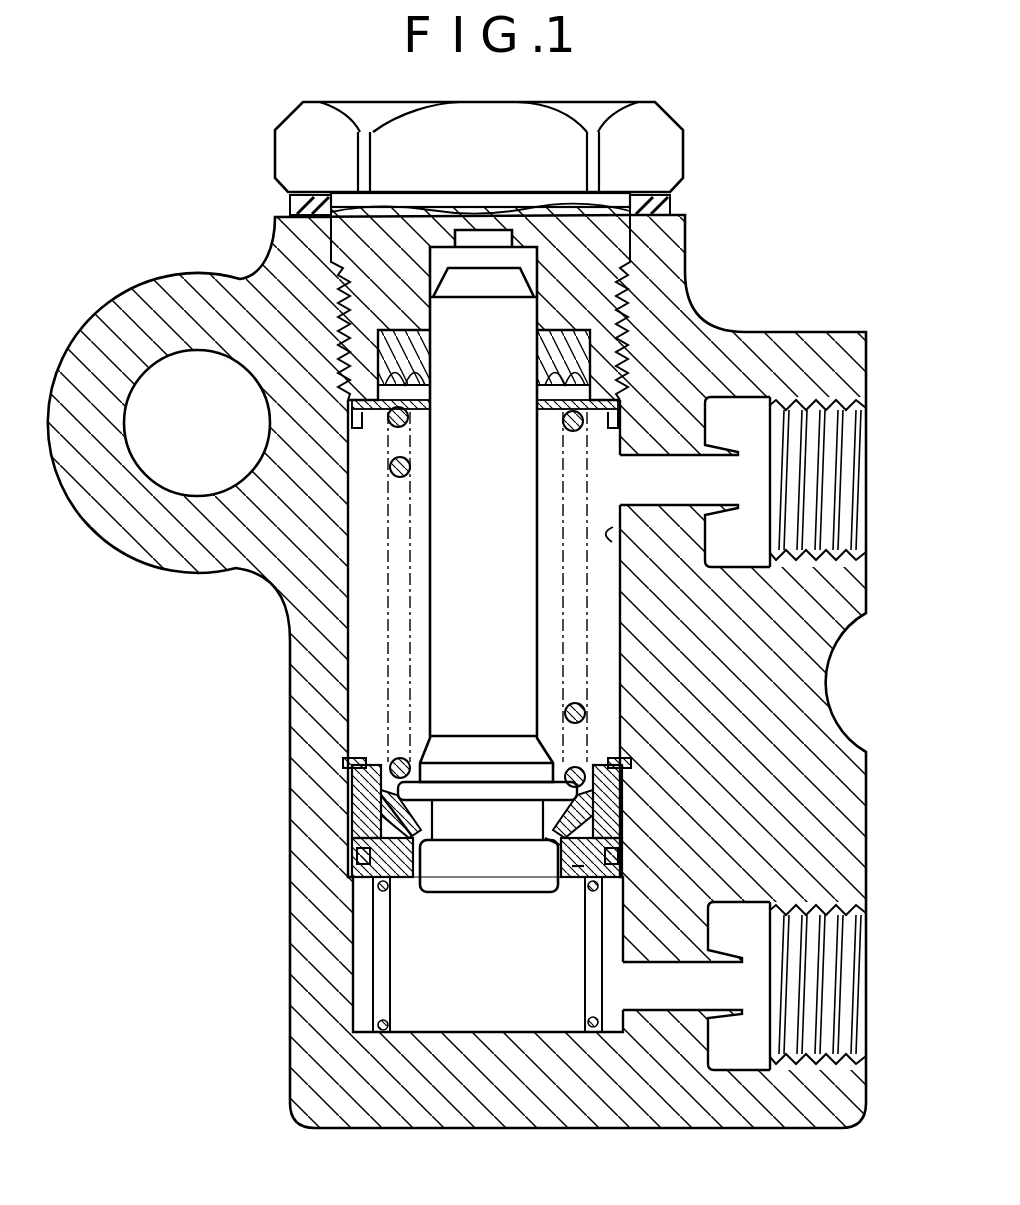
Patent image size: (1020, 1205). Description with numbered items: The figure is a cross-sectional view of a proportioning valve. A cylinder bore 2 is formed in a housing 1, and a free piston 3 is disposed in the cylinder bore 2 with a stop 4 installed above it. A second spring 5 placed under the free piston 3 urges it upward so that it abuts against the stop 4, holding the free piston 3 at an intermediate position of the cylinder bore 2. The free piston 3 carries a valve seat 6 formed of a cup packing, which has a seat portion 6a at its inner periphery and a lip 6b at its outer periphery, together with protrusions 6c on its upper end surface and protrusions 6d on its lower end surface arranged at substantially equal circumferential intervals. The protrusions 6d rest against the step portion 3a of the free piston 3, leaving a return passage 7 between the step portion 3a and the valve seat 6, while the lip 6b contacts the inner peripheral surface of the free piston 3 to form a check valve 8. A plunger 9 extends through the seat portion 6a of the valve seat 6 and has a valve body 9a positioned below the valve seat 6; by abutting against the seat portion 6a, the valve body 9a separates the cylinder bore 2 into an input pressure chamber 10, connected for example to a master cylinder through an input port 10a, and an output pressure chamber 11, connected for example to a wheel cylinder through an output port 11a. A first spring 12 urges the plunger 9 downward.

The housing 1 is at (665, 278).
The cylinder bore 2 is at (613, 540).
The free piston 3 is at (608, 800).
The step portion 3a is at (385, 818).
The stop 4 is at (622, 757).
The spring (second spring) 5 is at (380, 957).
The valve seat 6 is at (590, 828).
The seat portion 6a is at (548, 845).
The lip 6b is at (590, 792).
The protrusions 6c is at (378, 808).
The protrusions 6d is at (378, 862).
The return passage 7 is at (577, 868).
The check valve 8 is at (350, 772).
The plunger 9 is at (496, 568).
The valve body 9a is at (518, 886).
The input pressure chamber 10 is at (548, 633).
The input port 10a is at (792, 400).
The output pressure chamber 11 is at (512, 1013).
The output port 11a is at (696, 986).
The spring (first spring) 12 is at (393, 505).